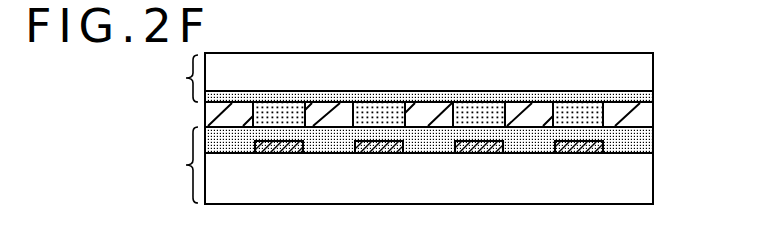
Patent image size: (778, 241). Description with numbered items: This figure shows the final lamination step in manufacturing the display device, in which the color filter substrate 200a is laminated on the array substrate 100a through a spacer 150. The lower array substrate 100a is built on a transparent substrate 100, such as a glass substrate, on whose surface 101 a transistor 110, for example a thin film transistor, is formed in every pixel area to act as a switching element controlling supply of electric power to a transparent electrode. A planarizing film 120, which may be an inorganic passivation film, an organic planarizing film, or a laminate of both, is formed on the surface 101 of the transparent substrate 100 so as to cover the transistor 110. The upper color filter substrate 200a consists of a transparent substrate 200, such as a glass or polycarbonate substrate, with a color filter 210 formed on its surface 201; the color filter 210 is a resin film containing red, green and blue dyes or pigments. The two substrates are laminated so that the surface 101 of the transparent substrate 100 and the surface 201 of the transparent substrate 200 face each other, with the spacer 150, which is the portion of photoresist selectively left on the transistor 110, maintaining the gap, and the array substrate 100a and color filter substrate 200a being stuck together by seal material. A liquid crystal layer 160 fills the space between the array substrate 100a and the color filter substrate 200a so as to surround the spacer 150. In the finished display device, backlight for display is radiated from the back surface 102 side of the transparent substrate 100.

The transparent substrate 200 is at (632, 73).
The color filter 210 is at (654, 90).
The surface of transparent substrate 201 is at (599, 92).
The liquid crystal layer 160 is at (637, 117).
The planarizing film 120 is at (655, 130).
The spacer 150 is at (577, 117).
The surface of transparent substrate 101 is at (654, 140).
The transistor 110 is at (581, 153).
The transparent substrate 100 is at (635, 182).
The back surface 102 is at (637, 205).
The color filter substrate 200a is at (185, 78).
The array substrate 100a is at (165, 165).